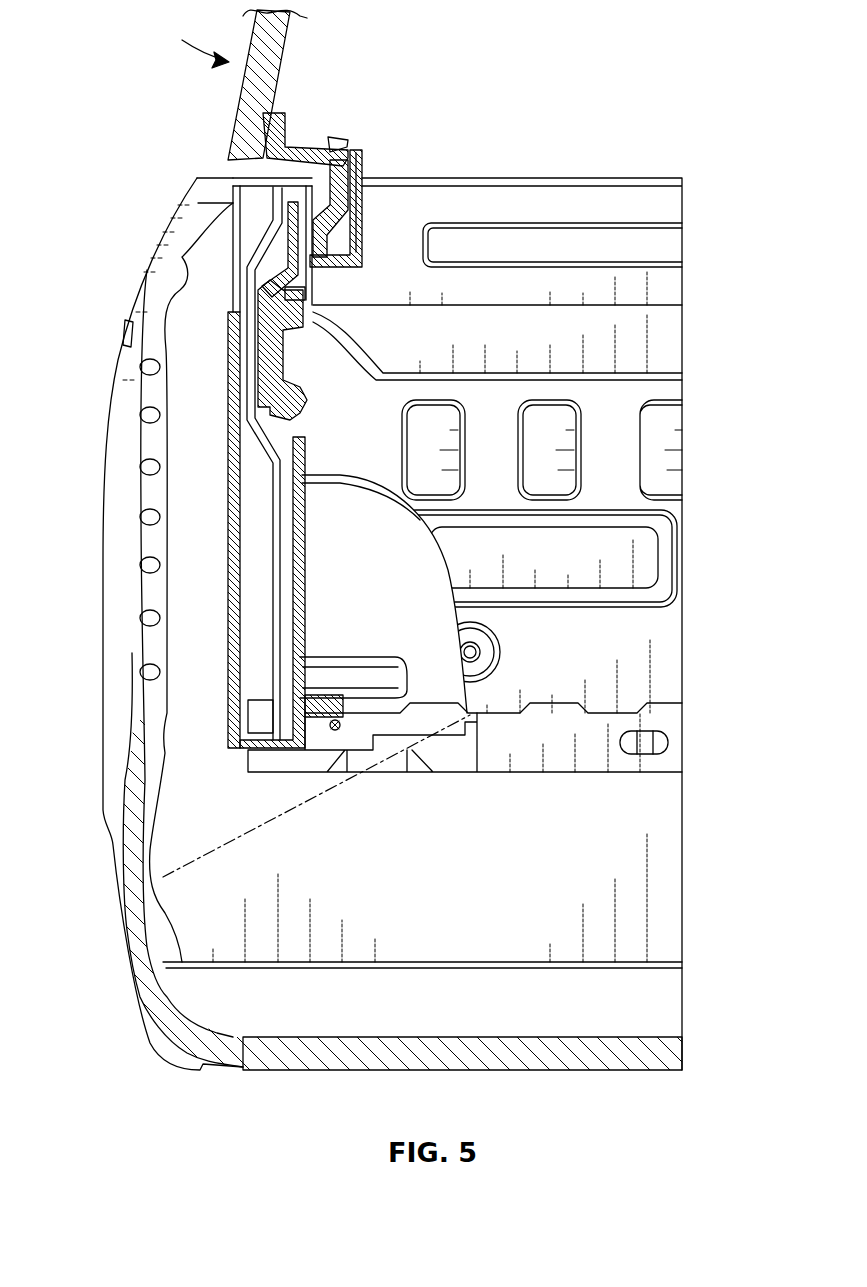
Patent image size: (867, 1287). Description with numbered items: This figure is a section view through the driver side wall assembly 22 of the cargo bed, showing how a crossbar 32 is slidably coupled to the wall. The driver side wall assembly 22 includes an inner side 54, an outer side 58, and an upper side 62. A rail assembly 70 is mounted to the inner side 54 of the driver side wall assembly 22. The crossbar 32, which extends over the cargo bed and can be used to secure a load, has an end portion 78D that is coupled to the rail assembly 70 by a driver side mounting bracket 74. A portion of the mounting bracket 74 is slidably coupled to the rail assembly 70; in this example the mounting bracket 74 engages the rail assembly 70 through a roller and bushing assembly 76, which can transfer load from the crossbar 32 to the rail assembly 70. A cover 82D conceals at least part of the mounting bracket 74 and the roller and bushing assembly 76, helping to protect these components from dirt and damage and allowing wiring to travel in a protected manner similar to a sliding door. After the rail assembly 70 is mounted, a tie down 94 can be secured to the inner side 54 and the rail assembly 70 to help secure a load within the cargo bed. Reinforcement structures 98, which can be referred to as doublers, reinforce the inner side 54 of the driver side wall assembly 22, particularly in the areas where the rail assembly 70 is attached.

The driver side wall assembly 22 is at (110, 397).
The second crossbar 32 is at (287, 53).
The inner side 54 is at (302, 608).
The outer side 58 is at (145, 278).
The upper side 62 is at (257, 175).
The rail assembly 70 is at (308, 225).
The driver side mounting bracket 74 is at (293, 143).
The roller and bushing assembly 76 is at (308, 225).
The end portion 78D is at (178, 48).
The cover 82D is at (358, 180).
The tie down 94 is at (307, 405).
The reinforcement structures 98 is at (227, 400).